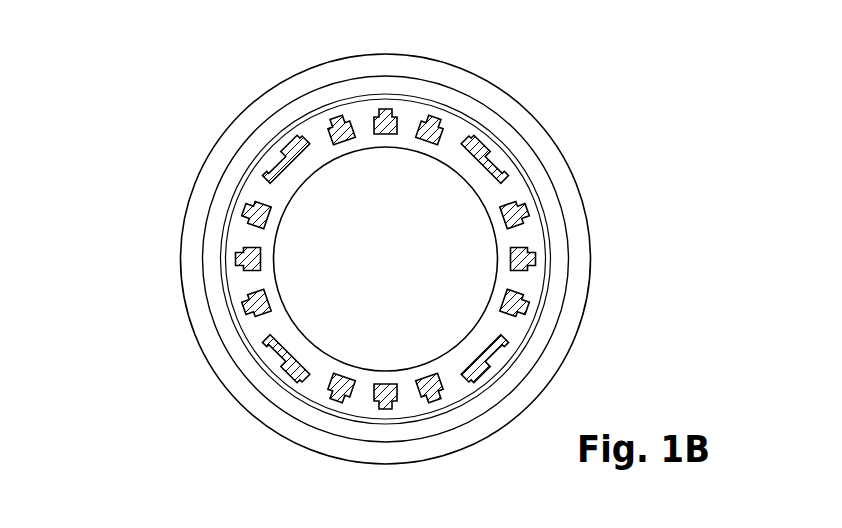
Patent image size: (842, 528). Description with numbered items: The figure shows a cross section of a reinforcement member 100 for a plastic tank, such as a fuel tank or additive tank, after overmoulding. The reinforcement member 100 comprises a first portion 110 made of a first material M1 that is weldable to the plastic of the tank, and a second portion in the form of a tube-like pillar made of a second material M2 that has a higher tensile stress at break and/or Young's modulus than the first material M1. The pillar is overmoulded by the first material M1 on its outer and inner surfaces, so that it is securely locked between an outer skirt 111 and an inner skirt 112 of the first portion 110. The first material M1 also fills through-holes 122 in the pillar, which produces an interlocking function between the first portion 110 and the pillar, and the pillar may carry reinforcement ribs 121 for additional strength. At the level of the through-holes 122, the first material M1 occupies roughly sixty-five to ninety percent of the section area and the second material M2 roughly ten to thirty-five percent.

The reinforcement member 100 is at (130, 268).
The first portion 110 is at (534, 278).
The outer skirt 111 is at (493, 152).
The inner skirt 112 is at (467, 175).
The reinforcement ribs 121 is at (293, 137).
The through-holes 122 is at (318, 142).
The first material M1 is at (238, 332).
The second material M2 is at (243, 195).